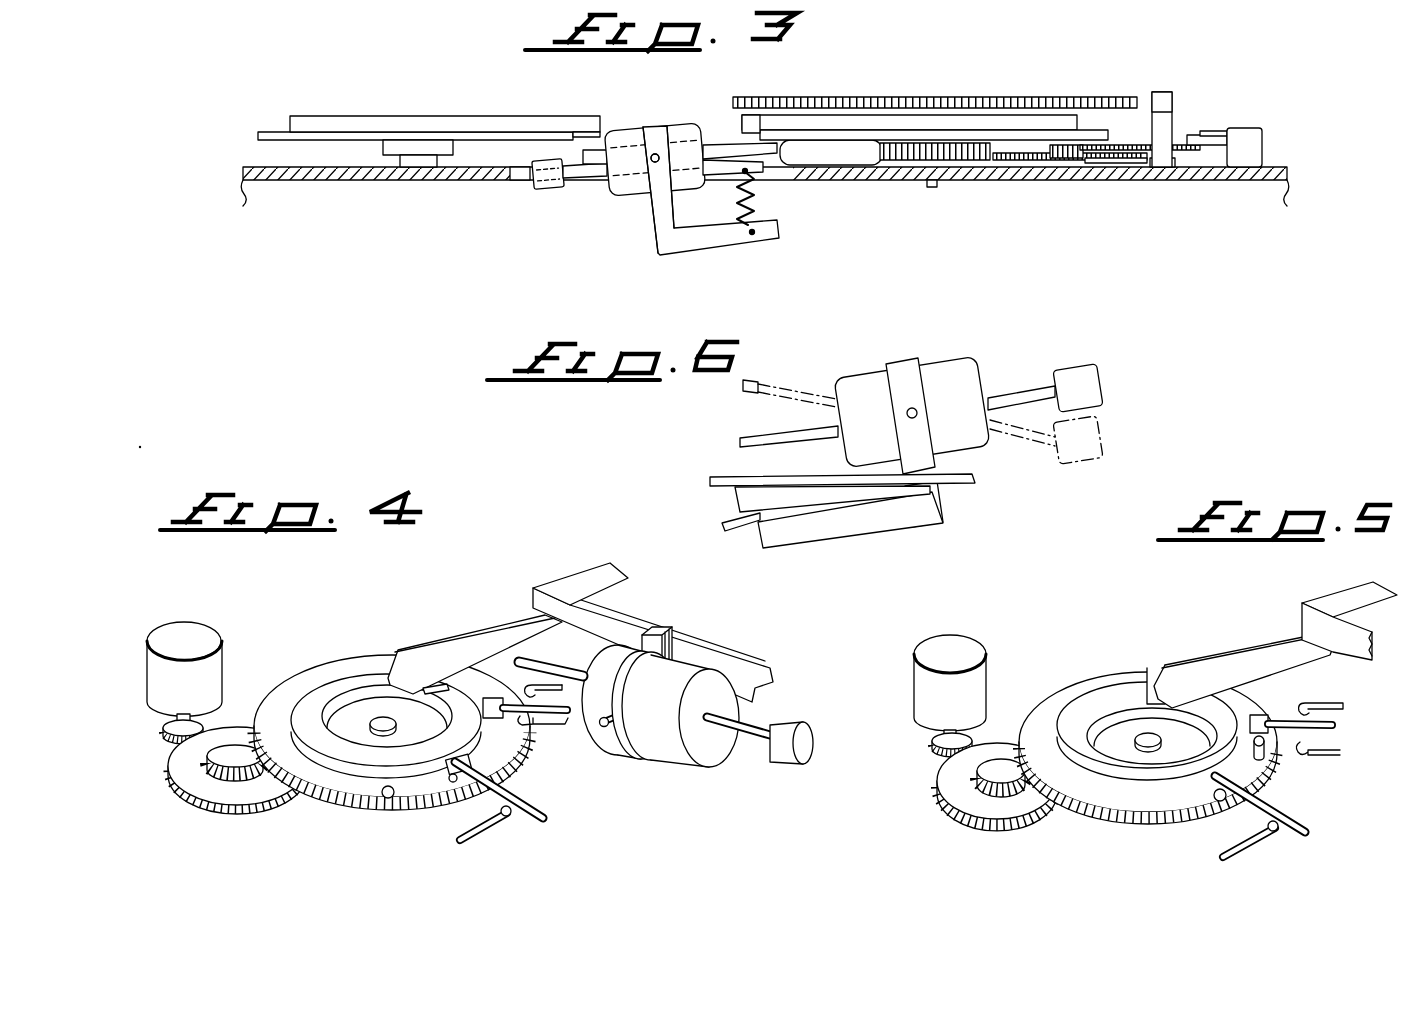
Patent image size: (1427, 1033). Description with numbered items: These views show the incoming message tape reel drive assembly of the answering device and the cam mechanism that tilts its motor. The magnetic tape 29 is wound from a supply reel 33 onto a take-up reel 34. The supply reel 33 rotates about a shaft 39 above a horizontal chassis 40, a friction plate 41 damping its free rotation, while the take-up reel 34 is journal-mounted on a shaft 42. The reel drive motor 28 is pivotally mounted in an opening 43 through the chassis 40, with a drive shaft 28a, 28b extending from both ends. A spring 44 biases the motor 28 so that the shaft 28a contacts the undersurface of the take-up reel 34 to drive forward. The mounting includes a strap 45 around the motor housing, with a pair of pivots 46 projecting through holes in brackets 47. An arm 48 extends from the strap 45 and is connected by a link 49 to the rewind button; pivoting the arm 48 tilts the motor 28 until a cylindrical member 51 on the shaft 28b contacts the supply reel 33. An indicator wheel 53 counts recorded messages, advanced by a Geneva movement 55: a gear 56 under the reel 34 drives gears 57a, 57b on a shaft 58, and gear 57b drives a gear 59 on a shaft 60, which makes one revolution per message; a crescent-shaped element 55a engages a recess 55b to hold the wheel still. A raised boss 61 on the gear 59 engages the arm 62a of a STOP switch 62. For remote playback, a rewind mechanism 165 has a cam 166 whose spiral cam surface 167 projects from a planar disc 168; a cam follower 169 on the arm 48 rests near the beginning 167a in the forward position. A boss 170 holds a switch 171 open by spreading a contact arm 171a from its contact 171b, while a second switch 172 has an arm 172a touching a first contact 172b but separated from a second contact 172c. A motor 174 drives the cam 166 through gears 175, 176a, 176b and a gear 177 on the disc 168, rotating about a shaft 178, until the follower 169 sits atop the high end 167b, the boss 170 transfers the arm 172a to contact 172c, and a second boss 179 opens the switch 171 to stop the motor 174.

In FIG. 3, the reel drive motor 28 is at (620, 185).
In FIG. 6, the reel drive motor 28 is at (945, 372).
In FIG. 4, the reel drive motor 28 is at (700, 760).
In FIG. 3, the drive shaft 28a is at (770, 161).
In FIG. 6, the drive shaft 28a is at (745, 440).
In FIG. 4, the drive shaft 28a is at (593, 642).
In FIG. 3, the drive shaft 28b is at (588, 172).
In FIG. 6, the drive shaft 28b is at (1040, 390).
In FIG. 4, the drive shaft 28b is at (764, 725).
In FIG. 3, the magnetic tape 29 is at (545, 125).
In FIG. 3, the supply reel 33 is at (259, 133).
In FIG. 3, the take-up reel 34 is at (847, 153).
In FIG. 3, the shaft 39 is at (418, 166).
In FIG. 3, the chassis 40 is at (288, 180).
In FIG. 3, the friction plate 41 is at (393, 150).
In FIG. 3, the shaft 42 is at (934, 187).
In FIG. 3, the opening 43 is at (520, 175).
In FIG. 3, the spring 44 is at (745, 207).
In FIG. 3, the strap 45 is at (657, 130).
In FIG. 6, the strap 45 is at (930, 450).
In FIG. 4, the strap 45 is at (631, 745).
In FIG. 3, the pivots 46 is at (670, 150).
In FIG. 4, the pivots 46 is at (605, 724).
In FIG. 3, the brackets 47 is at (597, 152).
In FIG. 3, the arm 48 is at (702, 250).
In FIG. 6, the arm 48 is at (822, 530).
In FIG. 4, the arm 48 is at (625, 630).
In FIG. 5, the arm 48 is at (1383, 647).
In FIG. 4, the link 49 is at (585, 580).
In FIG. 5, the link 49 is at (1350, 595).
In FIG. 3, the cylindrical member 51 is at (545, 188).
In FIG. 6, the cylindrical member 51 is at (1075, 378).
In FIG. 4, the cylindrical member 51 is at (785, 752).
In FIG. 3, the indicator wheel 53 is at (1015, 95).
In FIG. 3, the Geneva movement 55 is at (1152, 90).
In FIG. 3, the crescent-shaped element 55a is at (1172, 105).
In FIG. 3, the recess 55b is at (878, 100).
In FIG. 3, the gear 56 is at (907, 157).
In FIG. 3, the gear 57a is at (1025, 160).
In FIG. 3, the gear 57b is at (1084, 160).
In FIG. 3, the shaft 58 is at (1065, 160).
In FIG. 3, the gear 59 is at (1127, 145).
In FIG. 3, the shaft 60 is at (1159, 167).
In FIG. 3, the raised boss 61 is at (1185, 135).
In FIG. 3, the STOP switch 62 is at (1265, 151).
In FIG. 3, the arm 62a is at (1215, 133).
In FIG. 4, the rewind mechanism 165 is at (347, 617).
In FIG. 5, the rewind mechanism 165 is at (1125, 640).
In FIG. 6, the cam 166 is at (708, 490).
In FIG. 4, the cam 166 is at (335, 655).
In FIG. 5, the cam 166 is at (1050, 690).
In FIG. 6, the spiral cam surface 167 is at (735, 498).
In FIG. 4, the spiral cam surface 167 is at (368, 760).
In FIG. 5, the spiral cam surface 167 is at (1175, 768).
In FIG. 4, the beginning of the cam surface 167a is at (375, 660).
In FIG. 5, the beginning of the cam surface 167a is at (1110, 707).
In FIG. 5, the high end of the cam surface 167b is at (1154, 670).
In FIG. 6, the planar disc 168 is at (735, 480).
In FIG. 4, the planar disc 168 is at (270, 700).
In FIG. 5, the planar disc 168 is at (1040, 725).
In FIG. 4, the cam follower 169 is at (430, 648).
In FIG. 5, the cam follower 169 is at (1200, 670).
In FIG. 4, the boss 170 is at (453, 772).
In FIG. 5, the boss 170 is at (1267, 764).
In FIG. 4, the switch 171 is at (542, 823).
In FIG. 5, the switch 171 is at (1285, 838).
In FIG. 4, the contact arm 171a is at (544, 802).
In FIG. 4, the contact 171b is at (492, 830).
In FIG. 4, the second switch 172 is at (500, 690).
In FIG. 5, the second switch 172 is at (1343, 735).
In FIG. 4, the arm 172a is at (513, 725).
In FIG. 5, the arm 172a is at (1278, 717).
In FIG. 5, the first contact 172b is at (1325, 752).
In FIG. 4, the second contact 172c is at (500, 680).
In FIG. 5, the second contact 172c is at (1300, 709).
In FIG. 4, the motor 174 is at (150, 660).
In FIG. 5, the motor 174 is at (943, 650).
In FIG. 4, the gear 175 is at (165, 745).
In FIG. 4, the gear 176a is at (185, 812).
In FIG. 4, the gear 176b is at (230, 780).
In FIG. 4, the gear 177 is at (330, 800).
In FIG. 4, the shaft 178 is at (380, 722).
In FIG. 4, the second boss 179 is at (389, 800).
In FIG. 5, the second boss 179 is at (1220, 800).